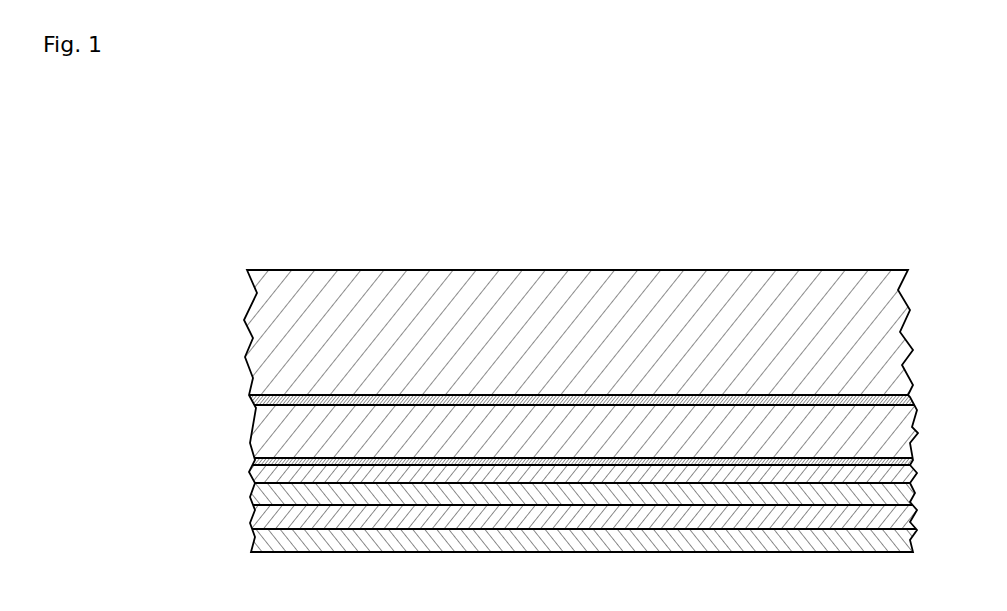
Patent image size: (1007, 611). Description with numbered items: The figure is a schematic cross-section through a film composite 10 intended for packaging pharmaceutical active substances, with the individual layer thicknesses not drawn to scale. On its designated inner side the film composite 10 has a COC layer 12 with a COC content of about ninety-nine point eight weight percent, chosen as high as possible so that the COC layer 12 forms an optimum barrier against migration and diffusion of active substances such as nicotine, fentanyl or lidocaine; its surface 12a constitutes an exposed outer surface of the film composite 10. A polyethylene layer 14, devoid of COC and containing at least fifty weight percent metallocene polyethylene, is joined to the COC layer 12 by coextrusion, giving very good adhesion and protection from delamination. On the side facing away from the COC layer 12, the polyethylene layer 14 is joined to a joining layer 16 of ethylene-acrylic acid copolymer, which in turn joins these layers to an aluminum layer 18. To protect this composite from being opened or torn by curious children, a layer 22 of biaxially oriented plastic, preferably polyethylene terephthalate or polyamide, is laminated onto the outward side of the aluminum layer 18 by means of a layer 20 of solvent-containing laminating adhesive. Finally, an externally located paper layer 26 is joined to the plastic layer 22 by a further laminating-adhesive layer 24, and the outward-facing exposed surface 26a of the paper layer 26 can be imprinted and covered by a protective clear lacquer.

The film composite 10 is at (220, 206).
The COC layer 12 is at (252, 541).
The surface of COC layer 12a is at (433, 563).
The polyethylene layer 14 is at (912, 517).
The joining layer 16 is at (252, 496).
The aluminum layer 18 is at (912, 475).
The layer of laminating adhesive 20 is at (252, 461).
The layer made of biaxially oriented plastic 22 is at (912, 433).
The further laminating-adhesive layer 24 is at (252, 400).
The paper layer 26 is at (252, 326).
The exposed surface of paper layer 26a is at (419, 259).